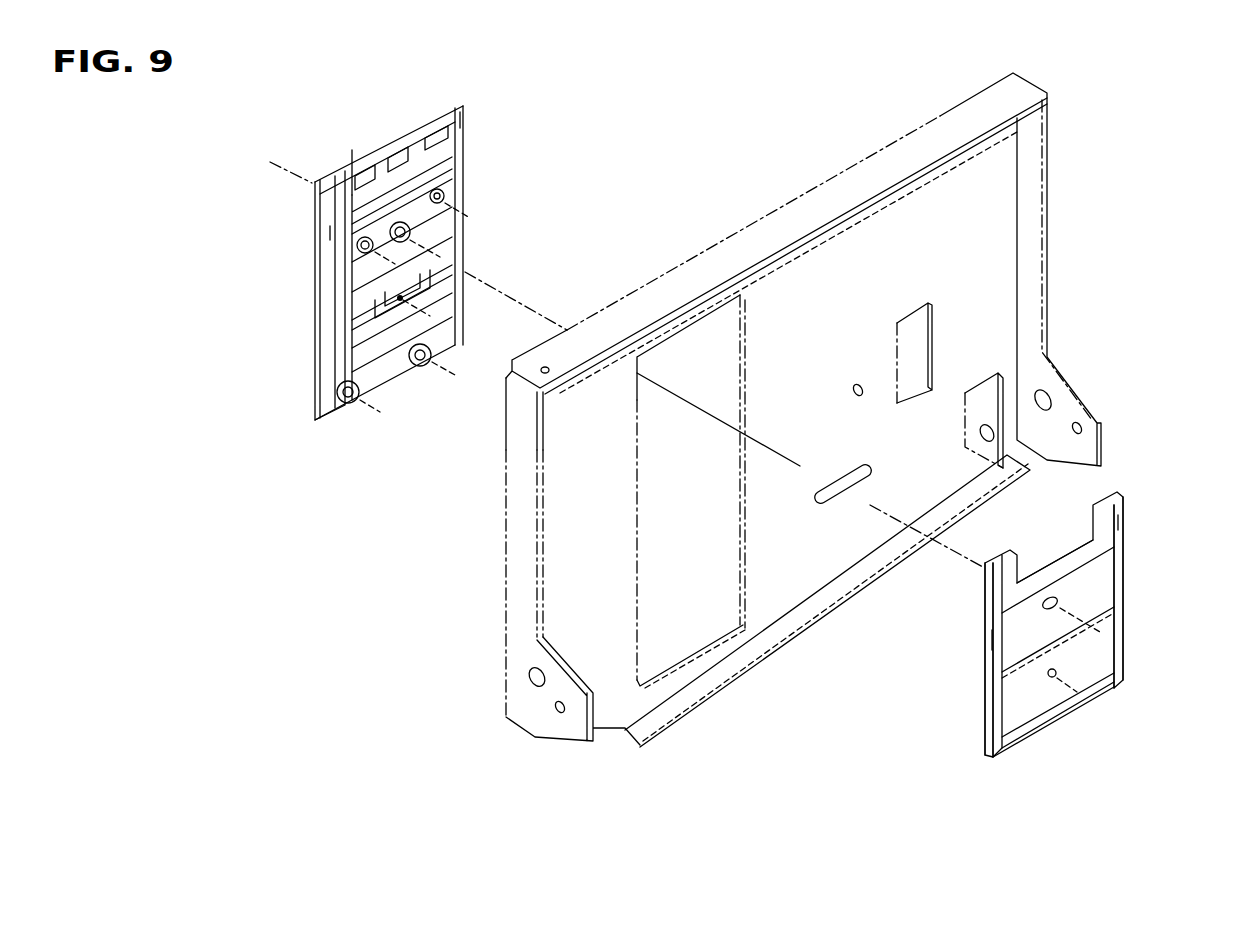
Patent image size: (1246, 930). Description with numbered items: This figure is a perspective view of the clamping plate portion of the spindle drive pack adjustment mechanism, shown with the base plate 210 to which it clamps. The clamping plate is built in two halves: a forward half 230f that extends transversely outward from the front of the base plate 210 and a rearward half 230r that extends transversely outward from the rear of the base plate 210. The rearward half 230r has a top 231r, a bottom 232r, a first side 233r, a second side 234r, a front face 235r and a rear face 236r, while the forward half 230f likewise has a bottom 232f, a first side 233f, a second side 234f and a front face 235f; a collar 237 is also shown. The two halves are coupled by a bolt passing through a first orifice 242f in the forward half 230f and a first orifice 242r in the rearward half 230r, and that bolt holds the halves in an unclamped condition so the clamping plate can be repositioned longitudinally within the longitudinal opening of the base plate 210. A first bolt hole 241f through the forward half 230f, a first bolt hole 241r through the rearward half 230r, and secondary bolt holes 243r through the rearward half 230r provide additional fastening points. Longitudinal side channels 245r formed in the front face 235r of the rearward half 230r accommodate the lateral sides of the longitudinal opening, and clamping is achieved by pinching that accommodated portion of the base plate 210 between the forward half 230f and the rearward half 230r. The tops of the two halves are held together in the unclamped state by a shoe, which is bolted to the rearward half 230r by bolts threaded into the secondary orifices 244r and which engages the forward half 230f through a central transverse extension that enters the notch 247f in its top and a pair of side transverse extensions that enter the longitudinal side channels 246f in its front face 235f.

The base plate 210 is at (1045, 243).
The rearward half of clamping plate 230r is at (452, 106).
The top of rearward half of clamping plate 231r is at (388, 143).
The bottom of rearward half of clamping plate 232r is at (330, 408).
The first side of rearward half of clamping plate 233r is at (313, 364).
The second side of rearward half of clamping plate 234r is at (465, 156).
The front face of rearward clamping plate 235r is at (418, 233).
The rear face of rearward clamping plate 236r is at (377, 153).
The collar 237 is at (335, 330).
The first bolt hole through rearward half 241r is at (422, 234).
The first orifice through rearward half 242r is at (404, 299).
The secondary bolt holes through rearward half 243r is at (444, 196).
The secondary orifices through rearward half 244r is at (420, 160).
The longitudinal side channels on rearward half 245r is at (462, 128).
The forward half of clamping plate 230f is at (1001, 720).
The bottom of forward half of clamping plate 232f is at (1037, 738).
The first side of forward half of clamping plate 233f is at (985, 691).
The second side of forward half of clamping plate 234f is at (1123, 538).
The front face of forward clamping plate 235f is at (1097, 583).
The first bolt hole through forward half 241f is at (1057, 603).
The first orifice through forward half 242f is at (1053, 679).
The longitudinal side channels on forward half 246f is at (1118, 523).
The notch on front half of clamping plate 247f is at (1040, 557).